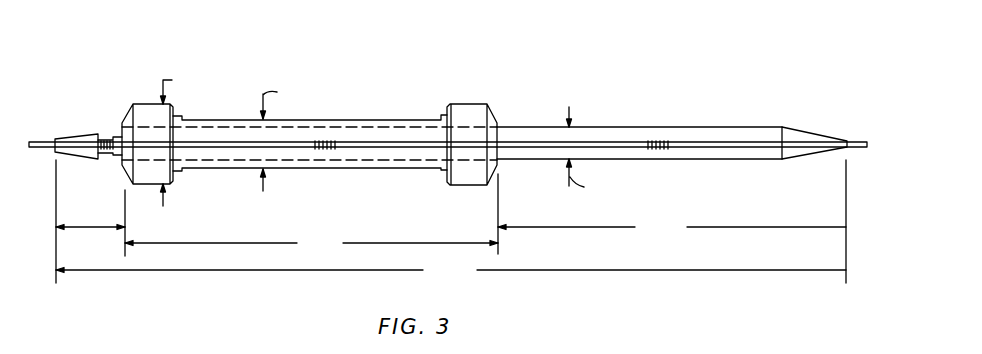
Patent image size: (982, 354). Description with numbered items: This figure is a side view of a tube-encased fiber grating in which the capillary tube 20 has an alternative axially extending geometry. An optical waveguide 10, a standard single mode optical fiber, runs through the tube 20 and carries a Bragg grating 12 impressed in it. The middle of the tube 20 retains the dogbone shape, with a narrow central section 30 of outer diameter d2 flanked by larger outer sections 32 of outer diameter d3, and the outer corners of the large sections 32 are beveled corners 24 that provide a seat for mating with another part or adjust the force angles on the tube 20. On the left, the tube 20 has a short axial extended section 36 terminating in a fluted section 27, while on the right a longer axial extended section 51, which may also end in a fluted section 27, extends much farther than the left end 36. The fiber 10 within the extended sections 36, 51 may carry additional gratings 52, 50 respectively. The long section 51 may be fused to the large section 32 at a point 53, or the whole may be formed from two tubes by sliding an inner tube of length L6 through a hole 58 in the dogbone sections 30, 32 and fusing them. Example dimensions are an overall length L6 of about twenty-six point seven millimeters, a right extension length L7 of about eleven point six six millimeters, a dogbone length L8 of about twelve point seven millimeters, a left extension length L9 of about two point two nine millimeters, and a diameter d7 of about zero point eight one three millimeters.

The optical waveguide 10 is at (440, 129).
The Bragg grating 12 is at (328, 140).
The capillary tube 20 is at (308, 129).
The beveled corners 24 is at (128, 115).
The fluted section 27 is at (75, 135).
The narrow central section 30 is at (309, 141).
The larger outer sections 32 is at (153, 185).
The axial extended section 36 is at (108, 136).
The grating 50 is at (661, 140).
The axial extended section 51 is at (639, 149).
The grating 52 is at (76, 156).
The point 53 is at (500, 165).
The hole 58 is at (368, 127).
The outer diameter of narrow section d2 is at (281, 136).
The outer diameter of large sections d3 is at (180, 136).
The outer diameter of long axial extended section d7 is at (588, 156).
The overall length L6 is at (451, 275).
The length of long axial extended section L7 is at (672, 233).
The length of dogbone portion L8 is at (311, 248).
The length of short axial extended section L9 is at (93, 226).